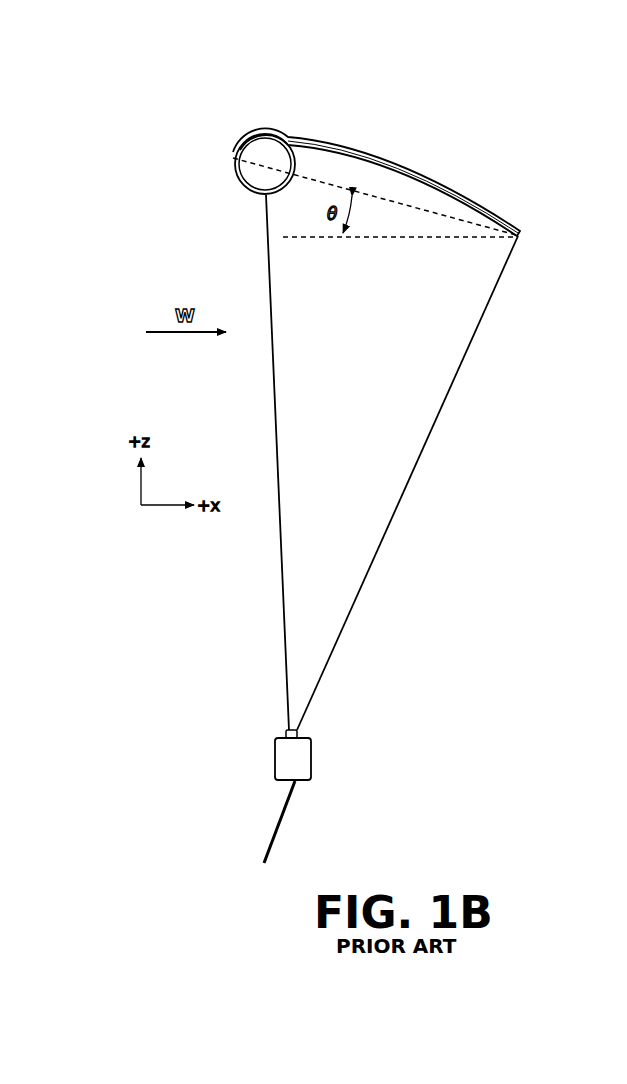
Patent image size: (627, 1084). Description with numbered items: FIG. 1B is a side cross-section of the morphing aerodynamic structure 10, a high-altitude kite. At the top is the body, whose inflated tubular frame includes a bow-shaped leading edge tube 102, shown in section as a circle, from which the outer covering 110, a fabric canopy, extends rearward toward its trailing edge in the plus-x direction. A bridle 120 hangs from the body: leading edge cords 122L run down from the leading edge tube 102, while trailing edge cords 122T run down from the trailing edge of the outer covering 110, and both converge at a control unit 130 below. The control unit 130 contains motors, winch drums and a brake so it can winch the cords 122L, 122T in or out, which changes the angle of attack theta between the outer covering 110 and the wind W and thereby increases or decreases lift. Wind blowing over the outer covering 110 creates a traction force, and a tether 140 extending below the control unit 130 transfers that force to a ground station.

The morphing aerodynamic structure 10 is at (498, 113).
The leading edge tube 102 is at (241, 156).
The outer covering 110 is at (391, 162).
The bridle 120 is at (358, 462).
The leading edge cords 122L is at (275, 407).
The trailing edge cords 122T is at (447, 400).
The control unit 130 is at (313, 754).
The tether 140 is at (277, 822).